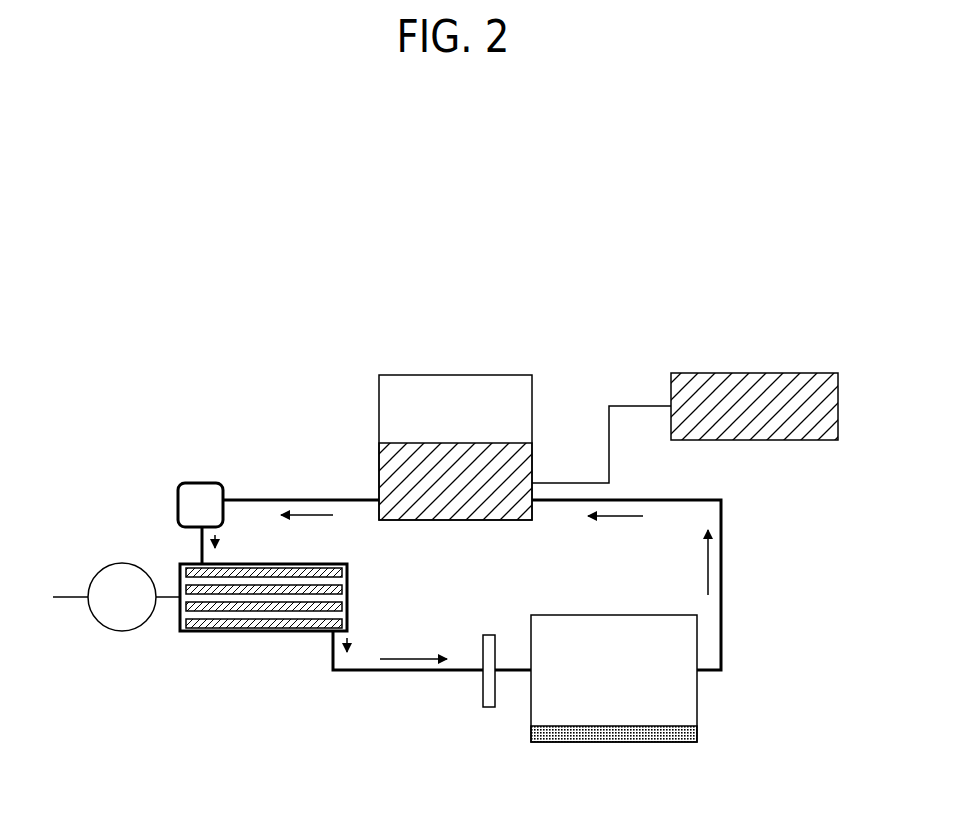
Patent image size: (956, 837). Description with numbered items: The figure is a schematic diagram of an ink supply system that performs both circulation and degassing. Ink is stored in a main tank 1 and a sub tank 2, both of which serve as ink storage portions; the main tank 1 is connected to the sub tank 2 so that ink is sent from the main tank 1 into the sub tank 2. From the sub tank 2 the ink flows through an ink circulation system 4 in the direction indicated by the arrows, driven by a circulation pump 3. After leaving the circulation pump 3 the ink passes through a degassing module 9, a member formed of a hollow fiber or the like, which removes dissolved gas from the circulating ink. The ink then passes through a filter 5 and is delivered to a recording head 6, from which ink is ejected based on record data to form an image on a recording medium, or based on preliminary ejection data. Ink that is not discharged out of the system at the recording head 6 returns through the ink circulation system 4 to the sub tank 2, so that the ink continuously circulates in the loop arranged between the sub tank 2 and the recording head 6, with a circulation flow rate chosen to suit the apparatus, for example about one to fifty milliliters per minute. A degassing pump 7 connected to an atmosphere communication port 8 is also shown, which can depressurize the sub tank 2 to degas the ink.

The main tank 1 is at (790, 390).
The sub tank 2 is at (484, 398).
The circulation pump 3 is at (178, 500).
The ink circulation system 4 is at (721, 605).
The filter 5 is at (490, 697).
The recording head 6 is at (697, 733).
The degassing pump 7 is at (118, 605).
The atmosphere communication port 8 is at (60, 597).
The degassing module 9 is at (270, 633).